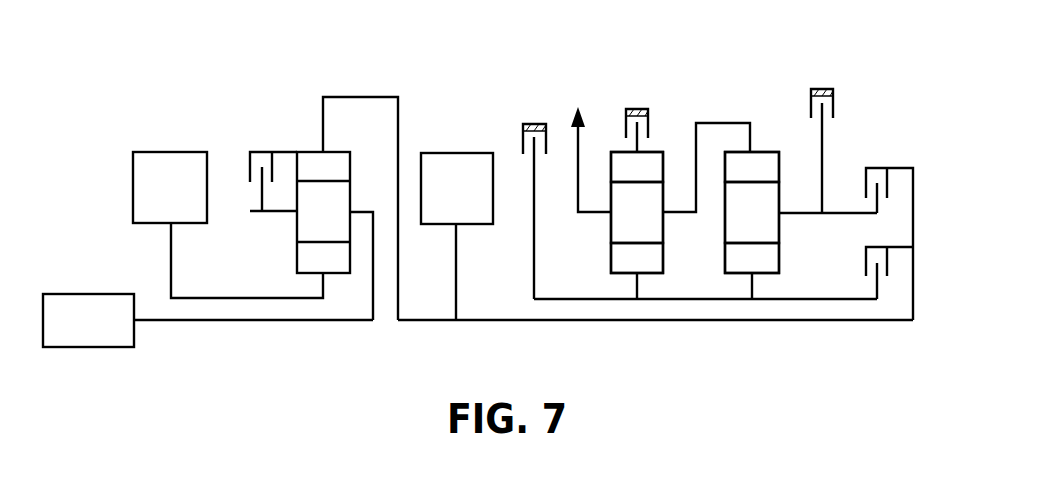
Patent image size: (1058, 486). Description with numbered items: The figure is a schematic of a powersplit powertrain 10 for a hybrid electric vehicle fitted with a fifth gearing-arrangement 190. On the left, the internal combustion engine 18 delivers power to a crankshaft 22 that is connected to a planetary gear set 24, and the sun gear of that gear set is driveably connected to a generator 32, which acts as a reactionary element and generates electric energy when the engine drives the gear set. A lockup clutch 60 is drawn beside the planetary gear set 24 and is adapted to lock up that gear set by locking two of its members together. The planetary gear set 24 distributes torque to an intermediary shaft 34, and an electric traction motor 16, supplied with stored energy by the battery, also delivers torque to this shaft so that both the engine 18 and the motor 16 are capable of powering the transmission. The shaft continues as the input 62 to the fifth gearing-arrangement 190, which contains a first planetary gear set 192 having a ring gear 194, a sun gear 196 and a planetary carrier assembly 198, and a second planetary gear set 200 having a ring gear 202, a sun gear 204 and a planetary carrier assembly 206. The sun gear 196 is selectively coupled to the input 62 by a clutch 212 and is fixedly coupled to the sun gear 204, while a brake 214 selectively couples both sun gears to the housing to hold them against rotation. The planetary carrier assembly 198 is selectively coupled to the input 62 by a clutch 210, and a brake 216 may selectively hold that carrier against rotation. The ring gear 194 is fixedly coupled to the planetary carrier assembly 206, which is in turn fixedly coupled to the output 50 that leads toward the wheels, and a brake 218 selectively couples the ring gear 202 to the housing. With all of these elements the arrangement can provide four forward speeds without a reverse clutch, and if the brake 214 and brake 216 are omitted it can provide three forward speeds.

The powersplit powertrain 10 is at (236, 71).
The fifth gearing-arrangement 190 is at (816, 44).
The internal combustion engine 18 is at (106, 294).
The generator 32 is at (190, 152).
The crankshaft 22 is at (268, 320).
The lockup clutch 60 is at (285, 152).
The planetary gear set 24 is at (337, 152).
The intermediary shaft 34 is at (425, 320).
The input 62 is at (690, 320).
The electric traction motor 16 is at (440, 153).
The brake 214 is at (534, 124).
The output 50 is at (578, 139).
The second planetary gear set 200 is at (617, 152).
The ring gear 202 is at (637, 167).
The planetary carrier assembly 206 is at (637, 212).
The sun gear 204 is at (637, 258).
The brake 218 is at (637, 109).
The first planetary gear set 192 is at (758, 152).
The ring gear 194 is at (752, 167).
The planetary carrier assembly 198 is at (752, 212).
The sun gear 196 is at (752, 258).
The brake 216 is at (822, 89).
The clutch 210 is at (878, 168).
The clutch 212 is at (877, 247).